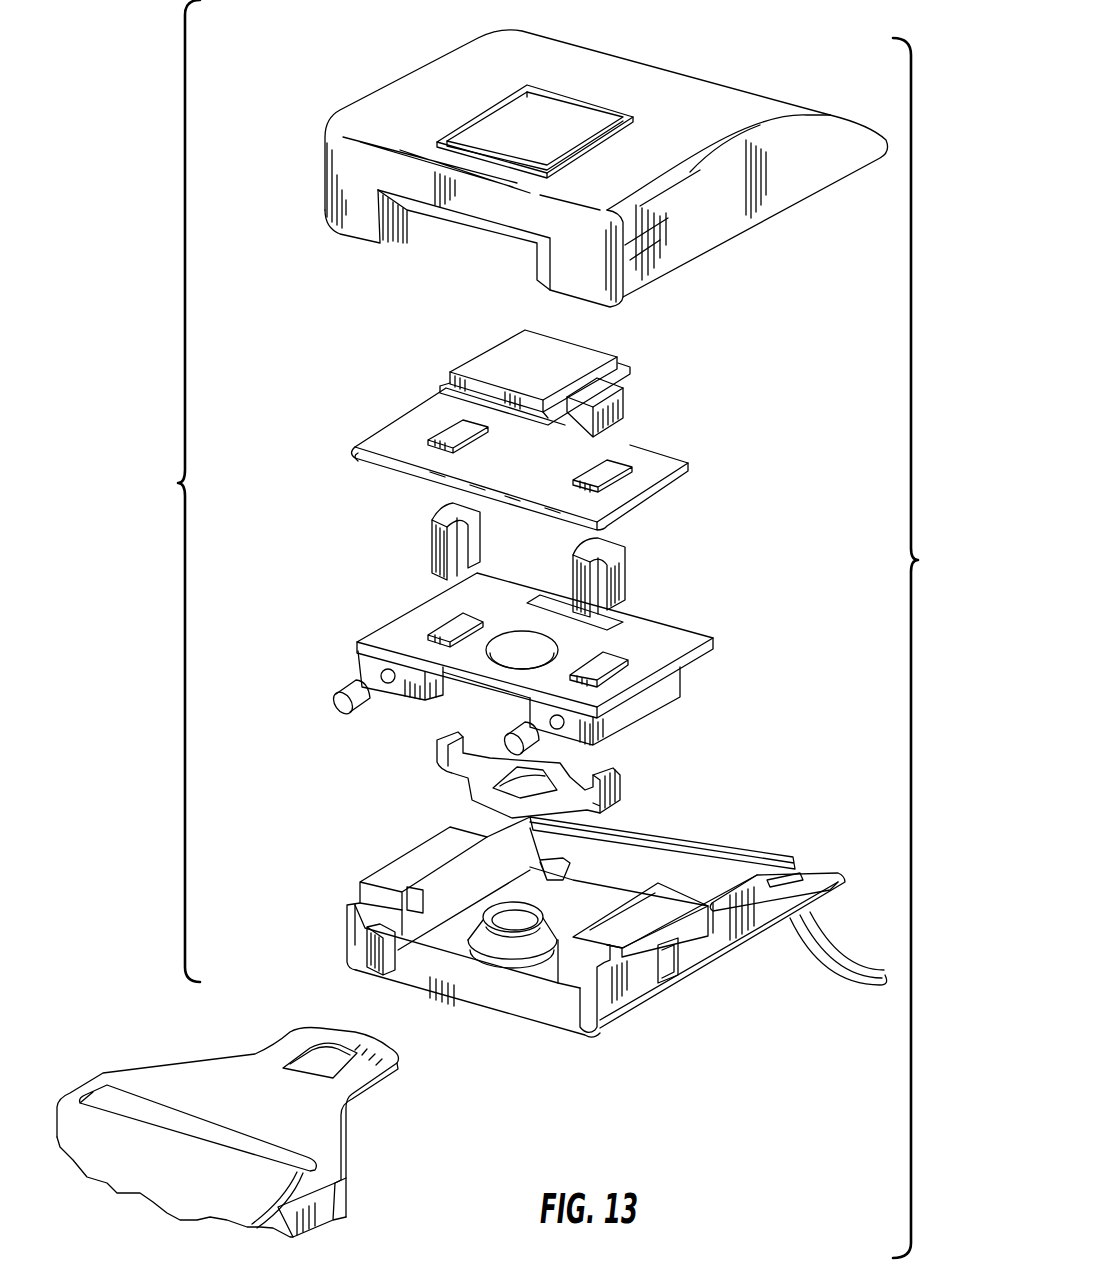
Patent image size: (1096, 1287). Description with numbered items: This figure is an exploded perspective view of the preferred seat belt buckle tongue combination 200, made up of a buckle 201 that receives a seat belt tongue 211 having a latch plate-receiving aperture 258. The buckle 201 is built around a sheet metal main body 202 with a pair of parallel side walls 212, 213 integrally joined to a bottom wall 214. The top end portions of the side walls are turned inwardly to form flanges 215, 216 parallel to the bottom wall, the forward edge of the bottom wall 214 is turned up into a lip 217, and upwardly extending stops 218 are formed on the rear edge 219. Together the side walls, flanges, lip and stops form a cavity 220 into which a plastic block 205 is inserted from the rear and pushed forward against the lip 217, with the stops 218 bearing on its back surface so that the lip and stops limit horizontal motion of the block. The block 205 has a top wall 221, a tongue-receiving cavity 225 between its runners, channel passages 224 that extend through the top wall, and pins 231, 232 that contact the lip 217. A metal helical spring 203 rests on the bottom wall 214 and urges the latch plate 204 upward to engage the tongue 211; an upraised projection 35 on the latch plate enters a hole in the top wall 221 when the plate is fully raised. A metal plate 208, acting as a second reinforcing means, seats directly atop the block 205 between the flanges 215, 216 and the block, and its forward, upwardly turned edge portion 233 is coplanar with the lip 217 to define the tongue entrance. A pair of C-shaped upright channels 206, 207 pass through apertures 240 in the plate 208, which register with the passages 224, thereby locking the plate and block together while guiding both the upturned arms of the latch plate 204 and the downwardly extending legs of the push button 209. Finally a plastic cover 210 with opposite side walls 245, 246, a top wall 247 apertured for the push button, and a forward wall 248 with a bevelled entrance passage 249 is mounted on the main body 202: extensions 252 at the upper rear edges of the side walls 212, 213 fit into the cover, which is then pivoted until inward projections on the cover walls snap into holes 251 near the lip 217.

The buckle tongue combination 200 is at (933, 648).
The buckle 201 is at (164, 491).
The main body 202 is at (637, 997).
The helical spring 203 is at (503, 900).
The latch plate 204 is at (610, 787).
The block 205 is at (678, 643).
The channel 206 is at (613, 562).
The channel 207 is at (437, 550).
The metal plate 208 is at (660, 465).
The push button 209 is at (567, 357).
The cover 210 is at (788, 182).
The seat belt tongue 211 is at (375, 1083).
The side wall 212 is at (347, 905).
The side wall 213 is at (713, 952).
The bottom wall 214 is at (450, 928).
The flange 215 is at (390, 873).
The flange 216 is at (667, 902).
The lip 217 is at (408, 973).
The stops 218 is at (603, 833).
The rear edge 219 is at (606, 878).
The cavity 220 is at (522, 973).
The top wall 221 is at (635, 633).
The channel passage 224 is at (447, 627).
The tongue-receiving cavity 225 is at (472, 703).
The pin 231 is at (347, 682).
The pin 232 is at (610, 753).
The edge portion 233 is at (375, 458).
The apertures 240 is at (458, 435).
The side wall 245 is at (357, 100).
The side wall 246 is at (715, 217).
The top wall 247 is at (602, 72).
The forward wall 248 is at (350, 195).
The entrance passage 249 is at (452, 255).
The hole 251 is at (378, 932).
The extension 252 is at (845, 883).
The latch plate-receiving aperture 258 is at (313, 1063).
The upraised projection 35 is at (520, 778).